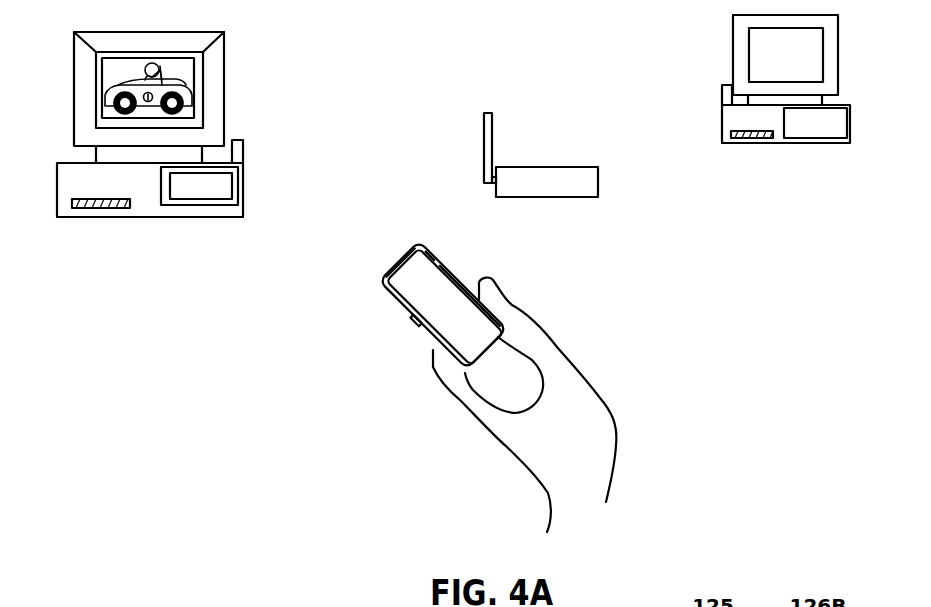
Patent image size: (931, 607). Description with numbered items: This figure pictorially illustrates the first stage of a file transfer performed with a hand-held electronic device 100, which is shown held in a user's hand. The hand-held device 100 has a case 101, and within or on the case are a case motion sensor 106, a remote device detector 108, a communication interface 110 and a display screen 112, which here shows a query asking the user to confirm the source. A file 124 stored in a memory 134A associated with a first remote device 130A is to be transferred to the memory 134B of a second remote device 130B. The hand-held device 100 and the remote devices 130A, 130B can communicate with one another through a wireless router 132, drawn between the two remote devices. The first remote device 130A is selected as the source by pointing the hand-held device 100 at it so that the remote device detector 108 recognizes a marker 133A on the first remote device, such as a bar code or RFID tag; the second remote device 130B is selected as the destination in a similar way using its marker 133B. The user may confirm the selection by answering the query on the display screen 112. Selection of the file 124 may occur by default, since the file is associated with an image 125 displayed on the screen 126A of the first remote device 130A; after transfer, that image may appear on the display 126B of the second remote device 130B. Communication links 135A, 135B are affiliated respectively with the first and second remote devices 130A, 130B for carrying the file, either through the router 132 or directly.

The hand-held electronic device 100 is at (413, 277).
The case 101 is at (388, 302).
The case motion sensor 106 is at (410, 322).
The remote device detector 108 is at (390, 267).
The communication interface 110 is at (463, 272).
The display screen 112 is at (433, 250).
The file 124 is at (232, 190).
The image 125 is at (107, 65).
The screen of first remote device 126A is at (224, 33).
The display of second remote device 126B is at (823, 57).
The first remote device 130A is at (224, 78).
The second remote device 130B is at (732, 47).
The wireless router 132 is at (553, 167).
The marker on first remote device 133A is at (102, 208).
The marker on second remote device 133B is at (742, 138).
The memory of first remote device 134A is at (161, 187).
The memory of second remote device 134B is at (808, 138).
The communication link of first remote device 135A is at (243, 150).
The communication link of second remote device 135B is at (722, 98).